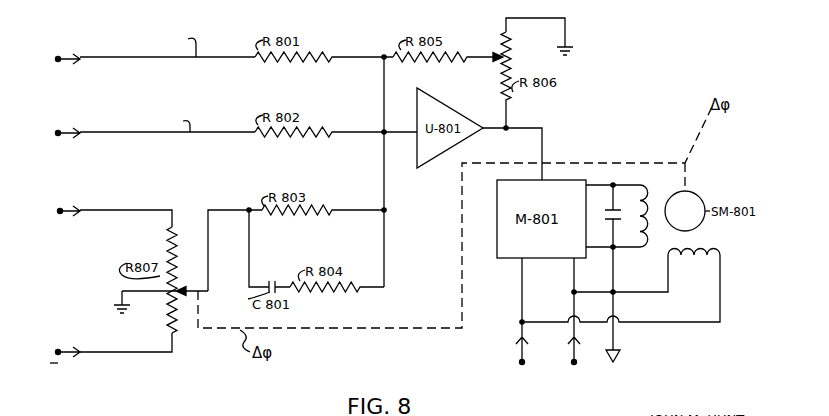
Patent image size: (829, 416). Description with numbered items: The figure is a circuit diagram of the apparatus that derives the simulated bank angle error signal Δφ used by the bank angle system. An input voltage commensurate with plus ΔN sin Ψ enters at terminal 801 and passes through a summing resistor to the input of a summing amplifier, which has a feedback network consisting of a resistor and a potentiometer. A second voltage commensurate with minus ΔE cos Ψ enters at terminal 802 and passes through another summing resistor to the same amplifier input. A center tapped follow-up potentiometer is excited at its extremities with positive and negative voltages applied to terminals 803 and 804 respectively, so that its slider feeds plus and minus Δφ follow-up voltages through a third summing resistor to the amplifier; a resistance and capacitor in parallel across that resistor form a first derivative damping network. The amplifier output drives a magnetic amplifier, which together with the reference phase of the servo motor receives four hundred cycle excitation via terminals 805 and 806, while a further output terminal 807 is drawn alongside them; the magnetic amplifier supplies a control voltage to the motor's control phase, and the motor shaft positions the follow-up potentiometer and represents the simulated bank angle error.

The terminal 801 is at (55, 58).
The terminal 802 is at (56, 137).
The terminal 803 is at (58, 213).
The terminal 804 is at (50, 341).
The terminal 805 is at (536, 376).
The terminal 806 is at (590, 360).
The output terminal 807 is at (640, 356).